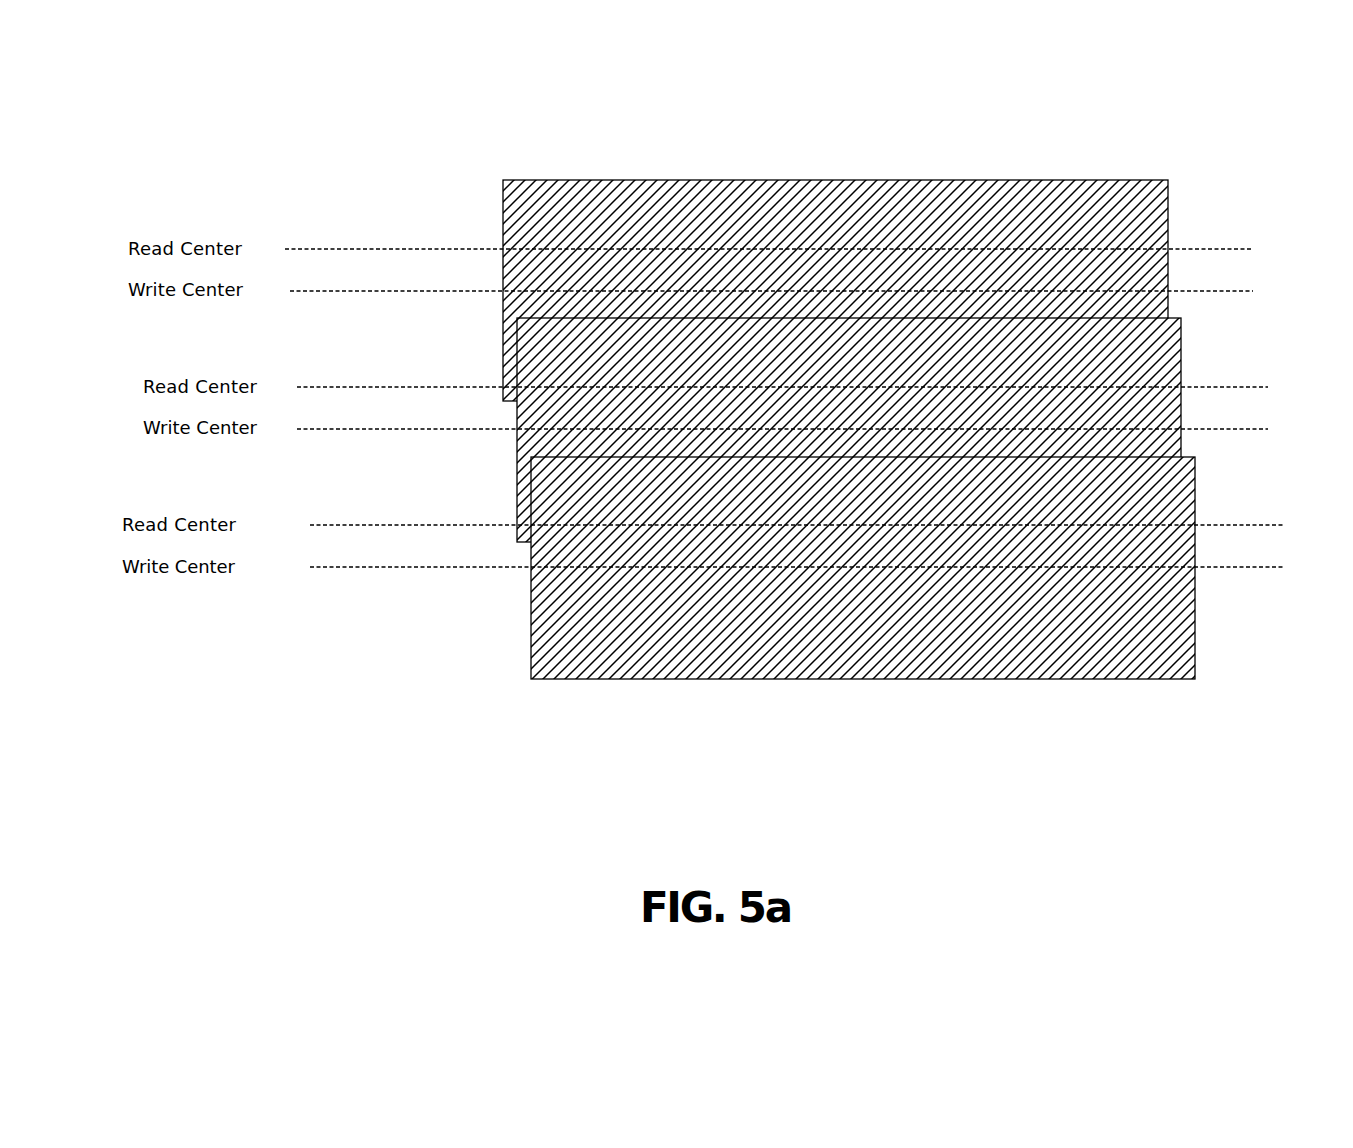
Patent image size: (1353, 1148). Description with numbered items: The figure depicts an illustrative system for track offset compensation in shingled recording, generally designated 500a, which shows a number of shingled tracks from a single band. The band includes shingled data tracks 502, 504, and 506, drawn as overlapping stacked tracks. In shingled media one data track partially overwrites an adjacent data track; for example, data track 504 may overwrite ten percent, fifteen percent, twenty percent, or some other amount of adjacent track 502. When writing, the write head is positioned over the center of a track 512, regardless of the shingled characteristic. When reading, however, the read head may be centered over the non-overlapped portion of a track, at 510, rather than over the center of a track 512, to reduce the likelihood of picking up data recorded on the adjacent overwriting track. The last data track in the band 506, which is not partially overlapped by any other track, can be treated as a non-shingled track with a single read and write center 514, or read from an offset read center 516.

The system for track offset compensation in shingled recording 500a is at (200, 92).
The shingled data track 502 is at (503, 210).
The shingled data track 504 is at (517, 510).
The last data track in a band 506 is at (531, 660).
The read center over non-overlapped portion of a track 510 is at (340, 387).
The center of a track 512 is at (340, 429).
The single read and write center 514 is at (358, 567).
The offset read center 516 is at (422, 525).